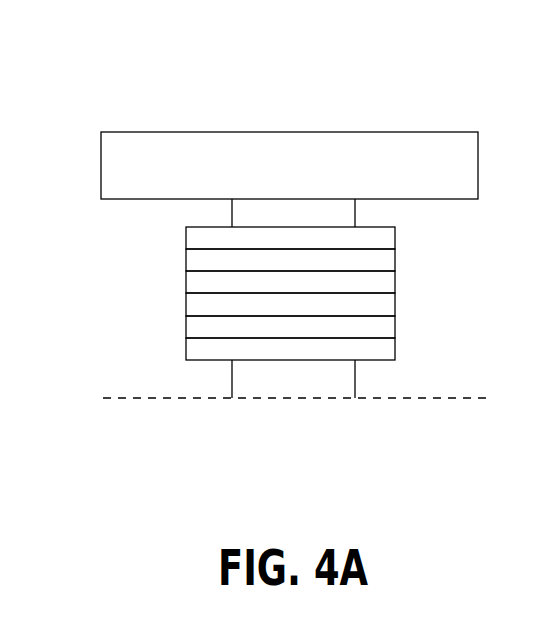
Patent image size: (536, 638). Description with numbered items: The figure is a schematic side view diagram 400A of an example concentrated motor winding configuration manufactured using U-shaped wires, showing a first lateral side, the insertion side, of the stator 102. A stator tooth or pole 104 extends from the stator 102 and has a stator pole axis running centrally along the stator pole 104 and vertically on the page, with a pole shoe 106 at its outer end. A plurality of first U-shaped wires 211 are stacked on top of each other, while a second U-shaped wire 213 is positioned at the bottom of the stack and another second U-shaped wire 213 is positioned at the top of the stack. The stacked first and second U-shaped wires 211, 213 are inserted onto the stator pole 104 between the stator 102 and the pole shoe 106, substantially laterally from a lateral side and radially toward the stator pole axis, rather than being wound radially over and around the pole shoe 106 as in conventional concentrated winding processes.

The schematic side view diagram 400A is at (386, 46).
The pole shoe 106 is at (144, 125).
The second U-shaped wire 213 is at (408, 238).
The first U-shaped wire 211 is at (408, 260).
The stator pole 104 is at (219, 375).
The stator 102 is at (168, 416).